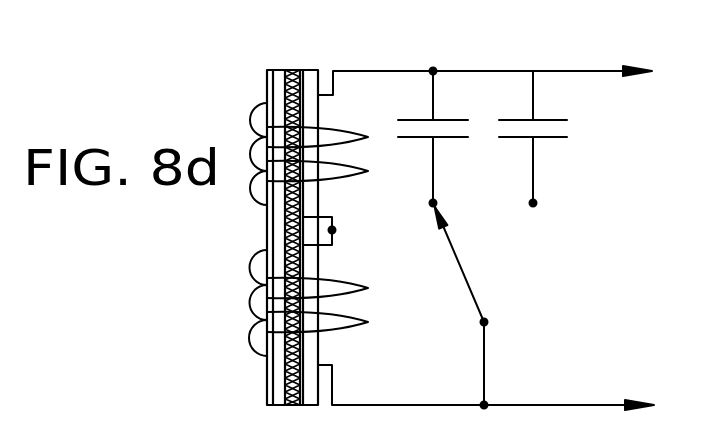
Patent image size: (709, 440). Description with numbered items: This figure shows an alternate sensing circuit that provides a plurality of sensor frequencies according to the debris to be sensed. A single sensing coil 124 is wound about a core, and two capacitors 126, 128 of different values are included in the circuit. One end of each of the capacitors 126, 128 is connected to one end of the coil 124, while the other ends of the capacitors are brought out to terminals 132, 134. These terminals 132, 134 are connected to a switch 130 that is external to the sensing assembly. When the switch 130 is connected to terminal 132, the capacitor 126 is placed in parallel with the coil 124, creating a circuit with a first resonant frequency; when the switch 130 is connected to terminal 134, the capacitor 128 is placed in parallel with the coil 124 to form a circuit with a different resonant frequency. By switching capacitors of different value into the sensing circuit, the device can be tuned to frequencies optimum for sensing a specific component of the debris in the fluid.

The sensing coil 124 is at (250, 270).
The capacitor 126 is at (432, 99).
The capacitor 128 is at (533, 97).
The switch 130 is at (468, 277).
The terminal 132 is at (431, 201).
The terminal 134 is at (534, 205).